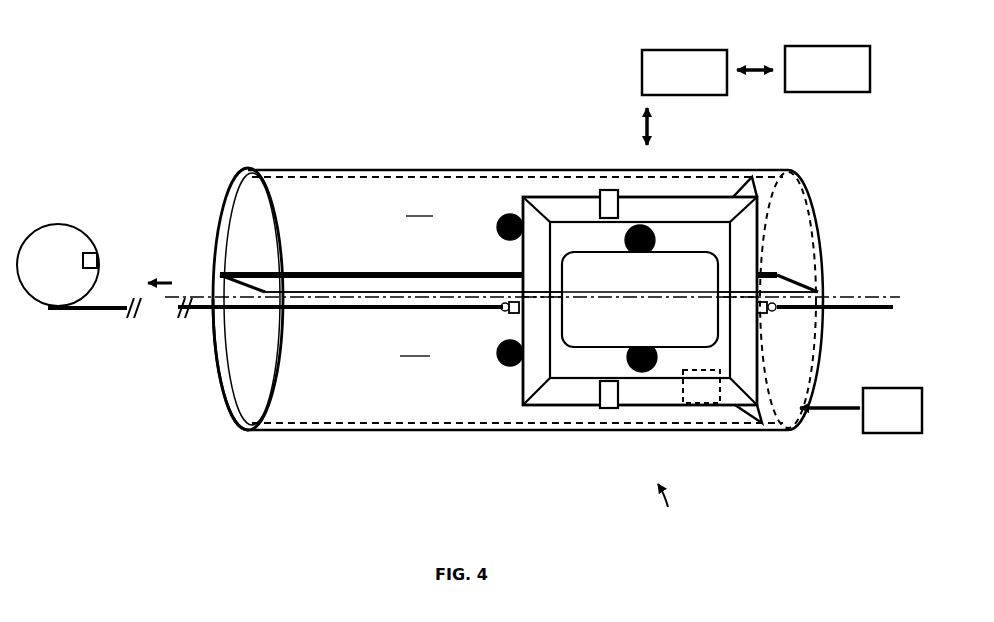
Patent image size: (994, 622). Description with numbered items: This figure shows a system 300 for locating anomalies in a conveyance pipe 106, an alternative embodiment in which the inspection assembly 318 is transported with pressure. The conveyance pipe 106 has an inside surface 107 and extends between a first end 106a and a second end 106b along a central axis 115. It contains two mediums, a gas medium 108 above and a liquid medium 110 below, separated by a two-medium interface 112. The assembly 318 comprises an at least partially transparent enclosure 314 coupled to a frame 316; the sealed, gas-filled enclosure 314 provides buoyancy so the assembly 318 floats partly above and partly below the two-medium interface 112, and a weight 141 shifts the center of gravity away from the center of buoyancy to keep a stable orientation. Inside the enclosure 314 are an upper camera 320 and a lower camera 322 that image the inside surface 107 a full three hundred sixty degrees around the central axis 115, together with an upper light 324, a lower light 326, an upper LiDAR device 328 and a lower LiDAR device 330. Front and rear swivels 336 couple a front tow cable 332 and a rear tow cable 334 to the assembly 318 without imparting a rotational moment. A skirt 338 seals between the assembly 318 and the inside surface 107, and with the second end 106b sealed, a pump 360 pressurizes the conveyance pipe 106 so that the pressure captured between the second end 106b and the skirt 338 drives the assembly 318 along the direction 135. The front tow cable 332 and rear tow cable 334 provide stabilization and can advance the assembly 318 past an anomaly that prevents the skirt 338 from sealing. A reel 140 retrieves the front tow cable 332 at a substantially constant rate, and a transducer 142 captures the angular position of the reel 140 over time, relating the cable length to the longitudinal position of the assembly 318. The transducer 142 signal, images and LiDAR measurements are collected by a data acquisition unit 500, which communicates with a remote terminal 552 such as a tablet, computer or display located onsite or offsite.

The conveyance pipe 106 is at (518, 311).
The first end of the conveyance pipe 106a is at (240, 432).
The second end of the conveyance pipe 106b is at (800, 424).
The inside surface 107 is at (238, 190).
The gas medium 108 is at (421, 207).
The liquid medium 110 is at (415, 347).
The two-medium interface 112 is at (378, 272).
The central axis 115 is at (878, 297).
The direction 135 is at (156, 280).
The reel 140 is at (60, 228).
The weight 141 is at (707, 396).
The transducer 142 is at (93, 251).
The system 300 is at (516, 126).
The enclosure 314 is at (743, 357).
The frame 316 is at (553, 410).
The assembly 318 is at (678, 505).
The upper camera 320 is at (643, 232).
The lower camera 322 is at (648, 368).
The upper light 324 is at (603, 190).
The lower light 326 is at (604, 410).
The upper LiDAR device 328 is at (509, 212).
The lower LiDAR device 330 is at (507, 367).
The front tow cable 332 is at (333, 311).
The rear tow cable 334 is at (857, 313).
The swivels 336 is at (501, 313).
The skirt 338 is at (742, 186).
The pump 360 is at (900, 434).
The data acquisition unit 500 is at (647, 50).
The remote terminal 552 is at (803, 46).